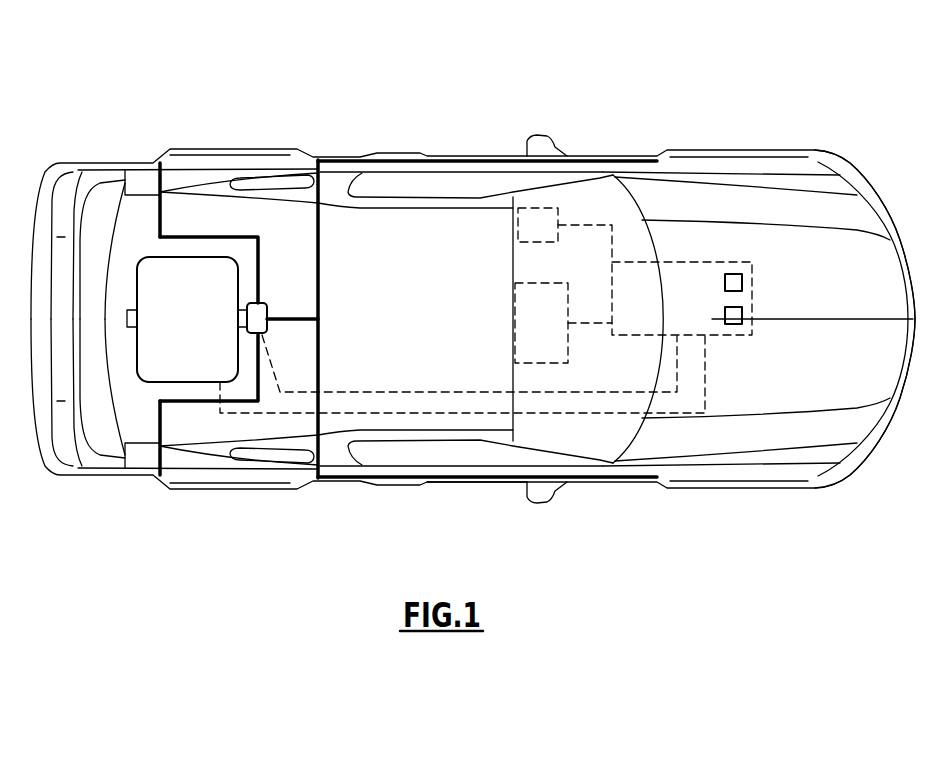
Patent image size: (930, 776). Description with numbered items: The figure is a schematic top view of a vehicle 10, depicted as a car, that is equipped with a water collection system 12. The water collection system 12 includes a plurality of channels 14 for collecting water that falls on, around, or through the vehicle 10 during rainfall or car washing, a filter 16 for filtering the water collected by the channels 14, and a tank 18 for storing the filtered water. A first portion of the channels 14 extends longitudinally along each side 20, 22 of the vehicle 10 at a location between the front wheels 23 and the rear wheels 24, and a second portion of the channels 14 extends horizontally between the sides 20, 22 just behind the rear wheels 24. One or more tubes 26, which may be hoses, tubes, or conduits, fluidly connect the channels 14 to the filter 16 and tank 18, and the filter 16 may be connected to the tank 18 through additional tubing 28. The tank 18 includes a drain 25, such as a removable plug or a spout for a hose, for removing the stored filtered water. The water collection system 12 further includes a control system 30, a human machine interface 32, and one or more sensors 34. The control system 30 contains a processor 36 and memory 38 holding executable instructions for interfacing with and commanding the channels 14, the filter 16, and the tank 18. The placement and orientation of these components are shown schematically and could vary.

The vehicle 10 is at (690, 64).
The water collection system 12 is at (408, 335).
The channels 14 is at (454, 160).
The filter 16 is at (262, 303).
The tank 18 is at (204, 328).
The side 20 is at (497, 500).
The side 22 is at (513, 133).
The front wheels 23 is at (753, 497).
The rear wheels 24 is at (262, 250).
The drain 25 is at (131, 328).
The tubes 26 is at (318, 340).
The additional tubing 28 is at (242, 310).
The control system 30 is at (708, 262).
The human machine interface 32 is at (568, 342).
The sensors 34 is at (560, 219).
The processor 36 is at (743, 285).
The memory 38 is at (743, 318).